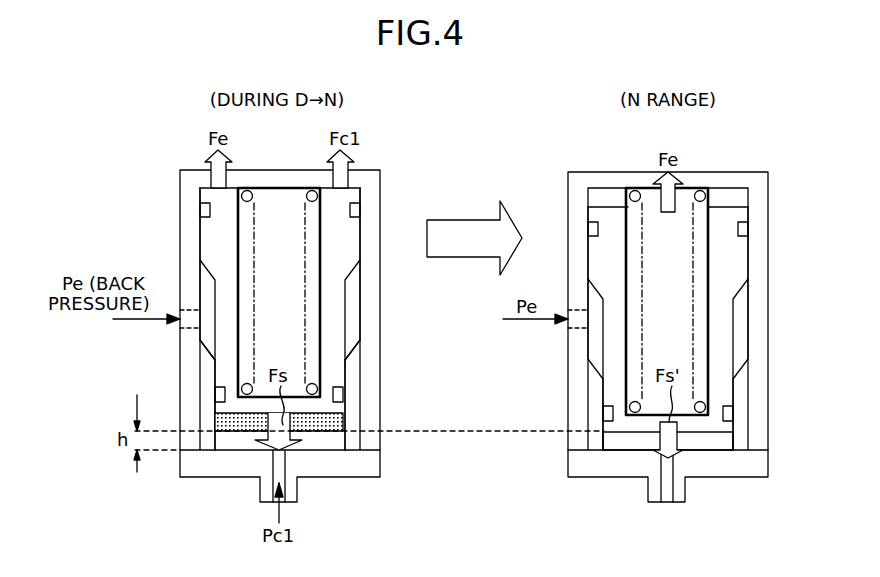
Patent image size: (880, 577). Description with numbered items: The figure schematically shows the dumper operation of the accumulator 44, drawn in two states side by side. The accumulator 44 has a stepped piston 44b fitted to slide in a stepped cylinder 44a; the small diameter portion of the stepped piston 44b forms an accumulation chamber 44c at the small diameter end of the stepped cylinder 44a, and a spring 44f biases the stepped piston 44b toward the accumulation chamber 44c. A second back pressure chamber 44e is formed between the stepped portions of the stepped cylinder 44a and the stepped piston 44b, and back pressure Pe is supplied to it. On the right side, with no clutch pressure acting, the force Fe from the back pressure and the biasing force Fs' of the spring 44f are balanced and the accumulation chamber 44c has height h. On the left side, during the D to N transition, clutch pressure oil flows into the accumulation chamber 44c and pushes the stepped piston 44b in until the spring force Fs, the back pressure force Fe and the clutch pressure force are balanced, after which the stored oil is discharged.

The accumulator 44 is at (180, 170).
The stepped cylinder 44a is at (207, 273).
The stepped piston 44b is at (210, 228).
The accumulation chamber 44c is at (248, 432).
The second back pressure chamber 44e is at (204, 338).
The spring 44f is at (257, 210).